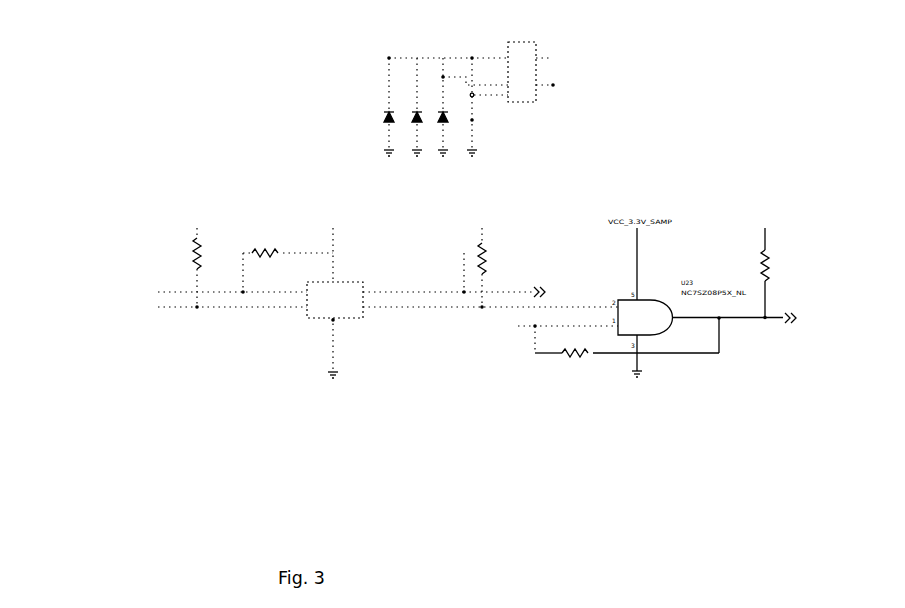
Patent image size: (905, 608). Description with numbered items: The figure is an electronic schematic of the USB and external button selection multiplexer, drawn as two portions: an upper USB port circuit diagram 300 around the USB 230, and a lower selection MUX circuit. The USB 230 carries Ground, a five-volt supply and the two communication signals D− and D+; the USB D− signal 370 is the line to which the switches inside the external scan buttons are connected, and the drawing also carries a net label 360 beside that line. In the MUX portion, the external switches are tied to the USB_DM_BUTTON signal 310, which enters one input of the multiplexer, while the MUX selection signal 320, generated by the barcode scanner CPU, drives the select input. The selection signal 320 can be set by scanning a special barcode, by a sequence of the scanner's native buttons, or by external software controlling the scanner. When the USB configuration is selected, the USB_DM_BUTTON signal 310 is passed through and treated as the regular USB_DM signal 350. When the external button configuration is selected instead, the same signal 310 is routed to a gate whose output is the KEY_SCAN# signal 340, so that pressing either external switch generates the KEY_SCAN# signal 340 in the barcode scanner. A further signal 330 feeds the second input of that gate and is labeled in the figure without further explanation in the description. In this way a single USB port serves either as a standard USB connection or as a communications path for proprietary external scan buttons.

The USB D− signal 370 is at (272, 68).
The button control net label 360 is at (314, 82).
The USB 230 is at (547, 50).
The USB port circuit diagram 300 is at (429, 101).
The USB_DM_BUTTON signal 310 is at (320, 311).
The SAM7_PPR#_MUX selection signal 320 is at (165, 307).
The external button enable signal 330 is at (562, 336).
The USB_DM signal 350 is at (515, 263).
The KEY_SCAN# signal 340 is at (761, 278).